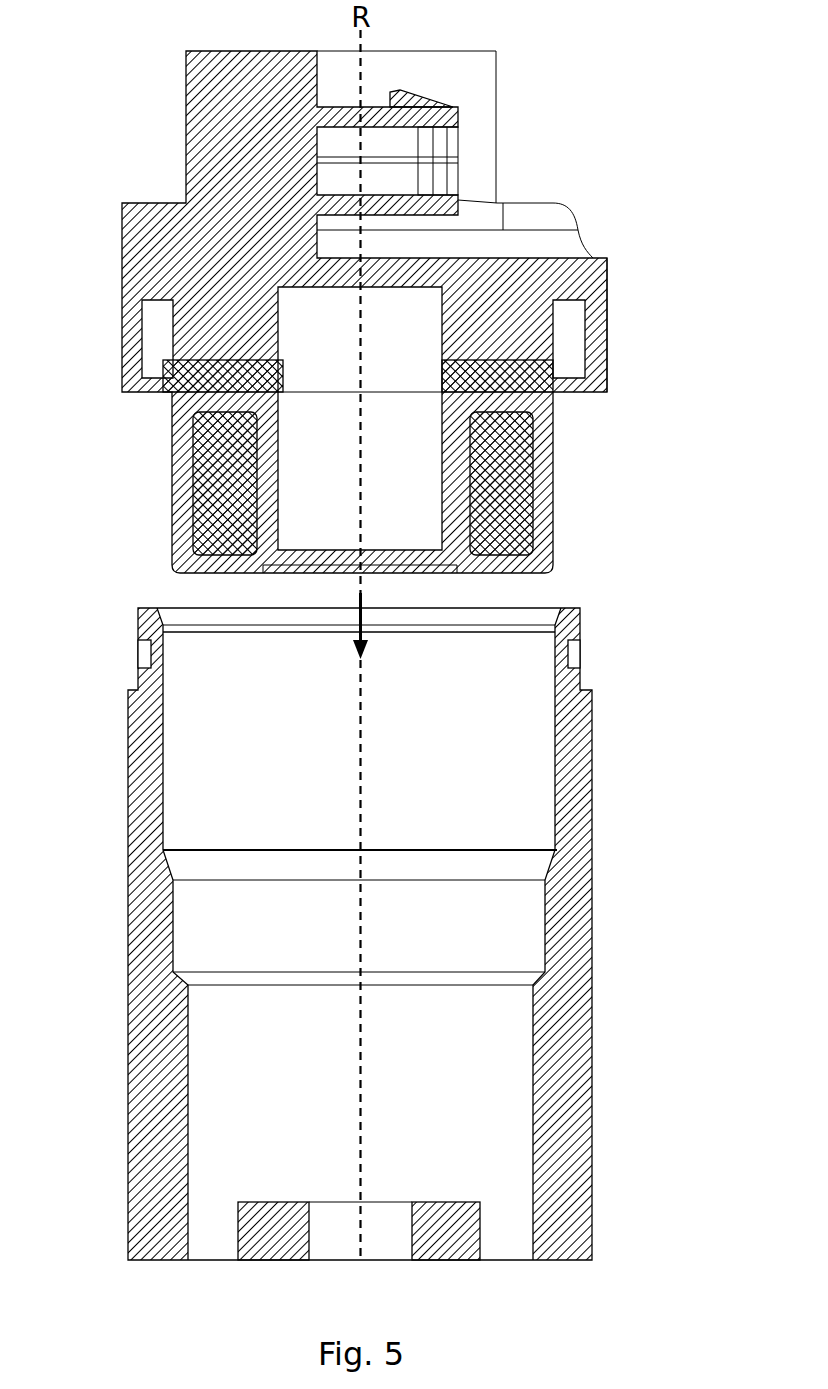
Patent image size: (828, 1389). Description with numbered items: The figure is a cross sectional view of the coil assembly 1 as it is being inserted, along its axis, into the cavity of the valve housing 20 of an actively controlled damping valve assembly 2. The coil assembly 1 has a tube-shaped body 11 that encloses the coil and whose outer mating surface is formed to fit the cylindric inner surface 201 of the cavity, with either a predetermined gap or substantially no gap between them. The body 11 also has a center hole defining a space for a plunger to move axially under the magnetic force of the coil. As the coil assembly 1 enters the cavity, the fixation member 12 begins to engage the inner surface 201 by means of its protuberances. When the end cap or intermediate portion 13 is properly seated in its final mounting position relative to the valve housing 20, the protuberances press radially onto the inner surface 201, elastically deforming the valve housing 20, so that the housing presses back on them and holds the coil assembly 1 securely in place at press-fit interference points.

The coil assembly 1 is at (383, 312).
The body 11 is at (172, 494).
The fixation member 12 is at (552, 385).
The end cap or intermediate portion 13 is at (603, 307).
The damping valve assembly 2 is at (366, 934).
The valve housing 20 is at (593, 936).
The inner surface 201 is at (557, 736).